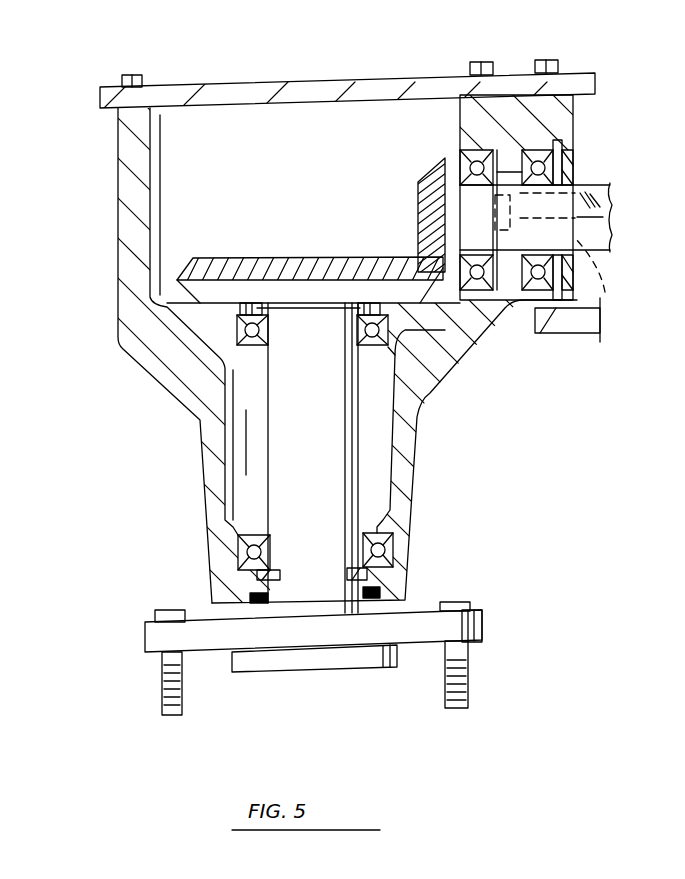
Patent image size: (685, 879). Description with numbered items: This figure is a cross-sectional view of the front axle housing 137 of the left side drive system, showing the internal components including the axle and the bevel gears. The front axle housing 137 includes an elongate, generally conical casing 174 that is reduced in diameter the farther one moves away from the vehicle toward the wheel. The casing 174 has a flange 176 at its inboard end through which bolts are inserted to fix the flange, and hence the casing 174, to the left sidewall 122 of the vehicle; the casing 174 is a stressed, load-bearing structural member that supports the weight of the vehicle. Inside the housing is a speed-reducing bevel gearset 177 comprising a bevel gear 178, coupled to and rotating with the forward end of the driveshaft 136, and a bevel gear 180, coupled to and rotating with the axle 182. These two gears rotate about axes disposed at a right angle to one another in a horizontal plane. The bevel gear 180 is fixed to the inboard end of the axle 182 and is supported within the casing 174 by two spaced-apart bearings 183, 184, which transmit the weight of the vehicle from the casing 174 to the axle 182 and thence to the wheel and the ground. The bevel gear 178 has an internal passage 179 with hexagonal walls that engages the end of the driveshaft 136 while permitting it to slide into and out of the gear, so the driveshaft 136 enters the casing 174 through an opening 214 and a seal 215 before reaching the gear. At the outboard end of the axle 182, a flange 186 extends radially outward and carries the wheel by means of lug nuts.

The left sidewall 122 is at (275, 87).
The speed-reducing bevel gearset 177 is at (136, 72).
The flange 176 is at (118, 130).
The casing 174 is at (446, 372).
The seal 215 is at (578, 155).
The driveshaft 136 is at (588, 186).
The bevel gear 178 is at (432, 164).
The bevel gear 180 is at (281, 258).
The axle 182 is at (313, 458).
The bearing 184 is at (396, 548).
The bearing 183 is at (478, 336).
The flange 186 is at (483, 633).
The internal passage 179 is at (612, 274).
The opening 214 is at (630, 247).
The front axle housing 137 is at (558, 556).